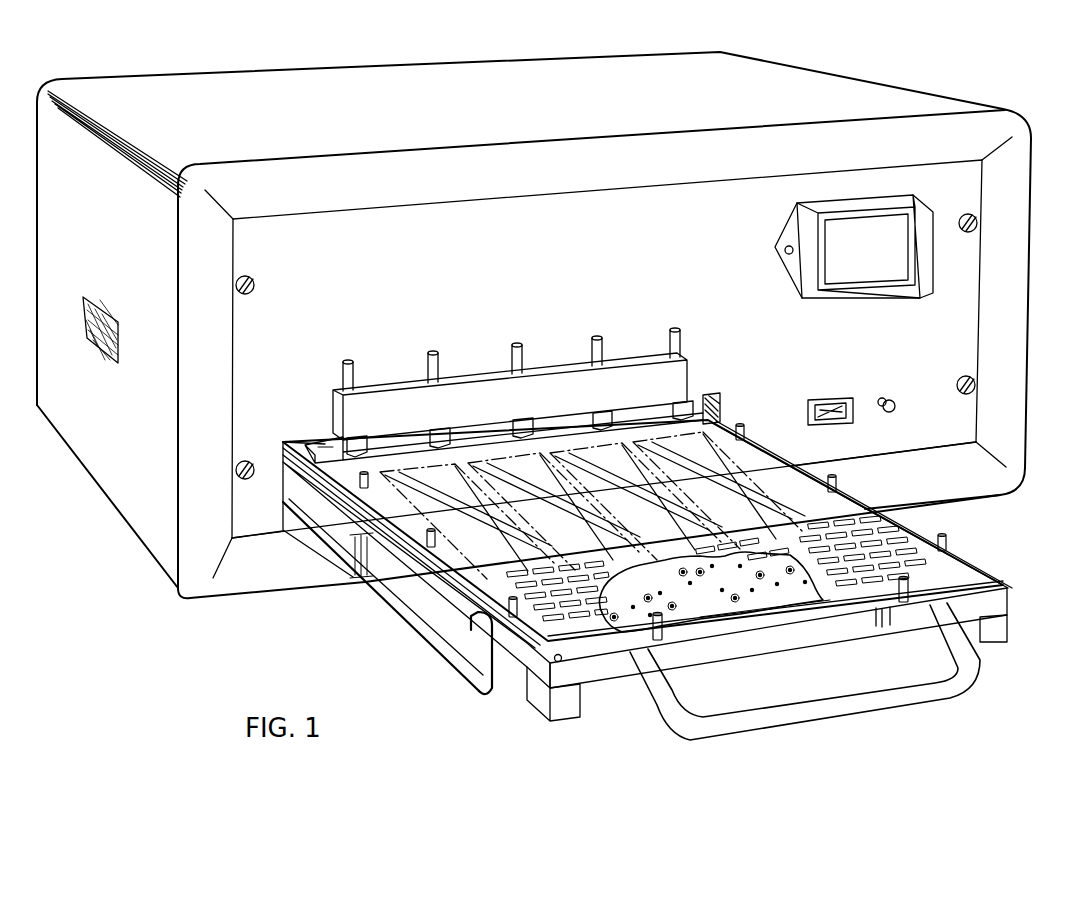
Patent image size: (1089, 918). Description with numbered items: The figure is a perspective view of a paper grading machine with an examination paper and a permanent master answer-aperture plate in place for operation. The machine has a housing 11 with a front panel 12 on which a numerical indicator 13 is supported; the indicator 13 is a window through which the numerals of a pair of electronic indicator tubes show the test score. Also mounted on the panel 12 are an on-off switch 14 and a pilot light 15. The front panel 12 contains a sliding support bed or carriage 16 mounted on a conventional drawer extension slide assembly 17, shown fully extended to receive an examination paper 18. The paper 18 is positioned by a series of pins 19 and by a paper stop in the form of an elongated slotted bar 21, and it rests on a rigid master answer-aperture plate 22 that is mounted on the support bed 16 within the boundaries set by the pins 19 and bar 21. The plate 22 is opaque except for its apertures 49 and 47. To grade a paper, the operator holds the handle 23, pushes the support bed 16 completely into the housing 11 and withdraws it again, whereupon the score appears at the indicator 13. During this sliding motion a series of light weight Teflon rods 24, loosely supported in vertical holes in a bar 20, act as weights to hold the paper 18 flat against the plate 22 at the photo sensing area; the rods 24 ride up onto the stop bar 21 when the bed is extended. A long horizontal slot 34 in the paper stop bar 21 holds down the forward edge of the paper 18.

The housing 11 is at (175, 85).
The front panel 12 is at (962, 329).
The numerical indicator 13 is at (867, 272).
The on-off switch 14 is at (838, 410).
The pilot light 15 is at (895, 408).
The sliding support bed 16 is at (525, 690).
The drawer extension slide assembly 17 is at (385, 595).
The examination paper 18 is at (950, 572).
The pins 19 is at (505, 605).
The bar 20 is at (412, 388).
The paper stop bar 21 is at (330, 445).
The master answer-aperture plate 22 is at (780, 600).
The handle 23 is at (820, 715).
The Teflon rods 24 is at (342, 374).
The horizontal slot 34 is at (320, 447).
The apertures 47 is at (742, 585).
The apertures 49 is at (660, 595).